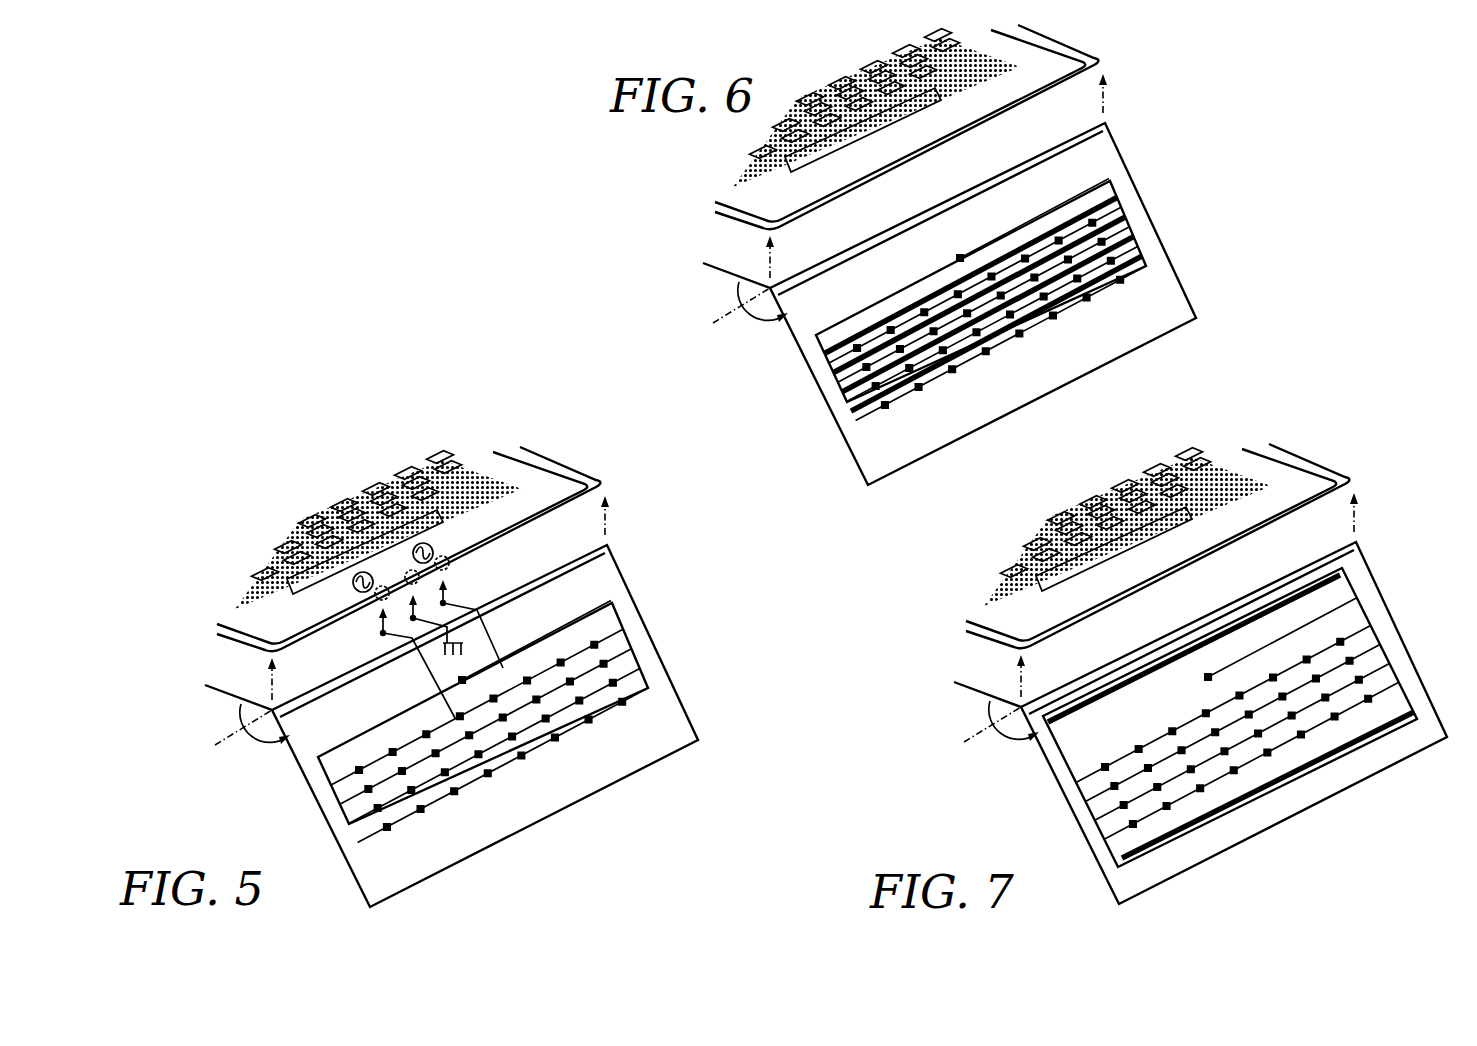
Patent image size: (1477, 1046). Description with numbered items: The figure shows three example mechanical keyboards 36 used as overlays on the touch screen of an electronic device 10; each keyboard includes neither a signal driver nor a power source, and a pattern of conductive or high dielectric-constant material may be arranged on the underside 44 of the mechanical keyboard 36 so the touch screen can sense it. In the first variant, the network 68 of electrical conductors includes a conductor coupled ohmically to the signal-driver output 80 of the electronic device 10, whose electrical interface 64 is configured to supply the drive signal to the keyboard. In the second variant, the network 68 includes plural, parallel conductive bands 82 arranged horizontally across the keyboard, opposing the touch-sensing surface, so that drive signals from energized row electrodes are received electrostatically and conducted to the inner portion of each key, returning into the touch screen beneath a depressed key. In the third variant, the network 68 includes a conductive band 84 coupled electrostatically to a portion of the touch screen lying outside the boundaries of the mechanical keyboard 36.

In FIG. 5, the electronic device 10 is at (568, 459).
In FIG. 6, the electronic device 10 is at (1066, 38).
In FIG. 7, the electronic device 10 is at (1317, 456).
In FIG. 5, the underside of mechanical keyboard 44 is at (673, 737).
In FIG. 6, the underside of mechanical keyboard 44 is at (1169, 316).
In FIG. 7, the underside of mechanical keyboard 44 is at (1433, 741).
In FIG. 5, the network of electrical conductors 68 is at (622, 628).
In FIG. 6, the network of electrical conductors 68 is at (1004, 290).
In FIG. 7, the network of electrical conductors 68 is at (1245, 717).
In FIG. 5, the electrical interface 64 is at (447, 547).
In FIG. 5, the signal-driver output 80 is at (352, 583).
In FIG. 6, the conductive bands 82 is at (913, 303).
In FIG. 7, the conductive band 84 is at (1100, 699).
In FIG. 5, the mechanical keyboard 36 is at (254, 767).
In FIG. 6, the mechanical keyboard 36 is at (753, 345).
In FIG. 7, the mechanical keyboard 36 is at (1005, 764).